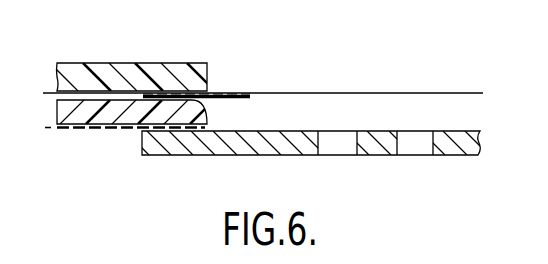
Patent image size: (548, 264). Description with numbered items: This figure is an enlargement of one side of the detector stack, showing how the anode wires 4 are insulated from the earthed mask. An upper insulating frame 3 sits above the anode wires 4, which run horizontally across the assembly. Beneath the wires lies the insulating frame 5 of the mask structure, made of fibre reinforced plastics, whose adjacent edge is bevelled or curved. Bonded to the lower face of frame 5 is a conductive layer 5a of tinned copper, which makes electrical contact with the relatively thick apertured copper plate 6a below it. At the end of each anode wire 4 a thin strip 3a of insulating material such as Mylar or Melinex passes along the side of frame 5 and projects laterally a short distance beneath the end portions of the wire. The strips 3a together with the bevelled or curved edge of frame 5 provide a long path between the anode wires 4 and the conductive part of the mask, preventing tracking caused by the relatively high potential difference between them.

The frame 3 is at (129, 76).
The thin strip of insulating material 3a is at (249, 99).
The anode wires 4 is at (362, 92).
The insulating frame 5 is at (128, 112).
The conductive layer 5a is at (92, 129).
The apertured copper plate 6a is at (240, 143).